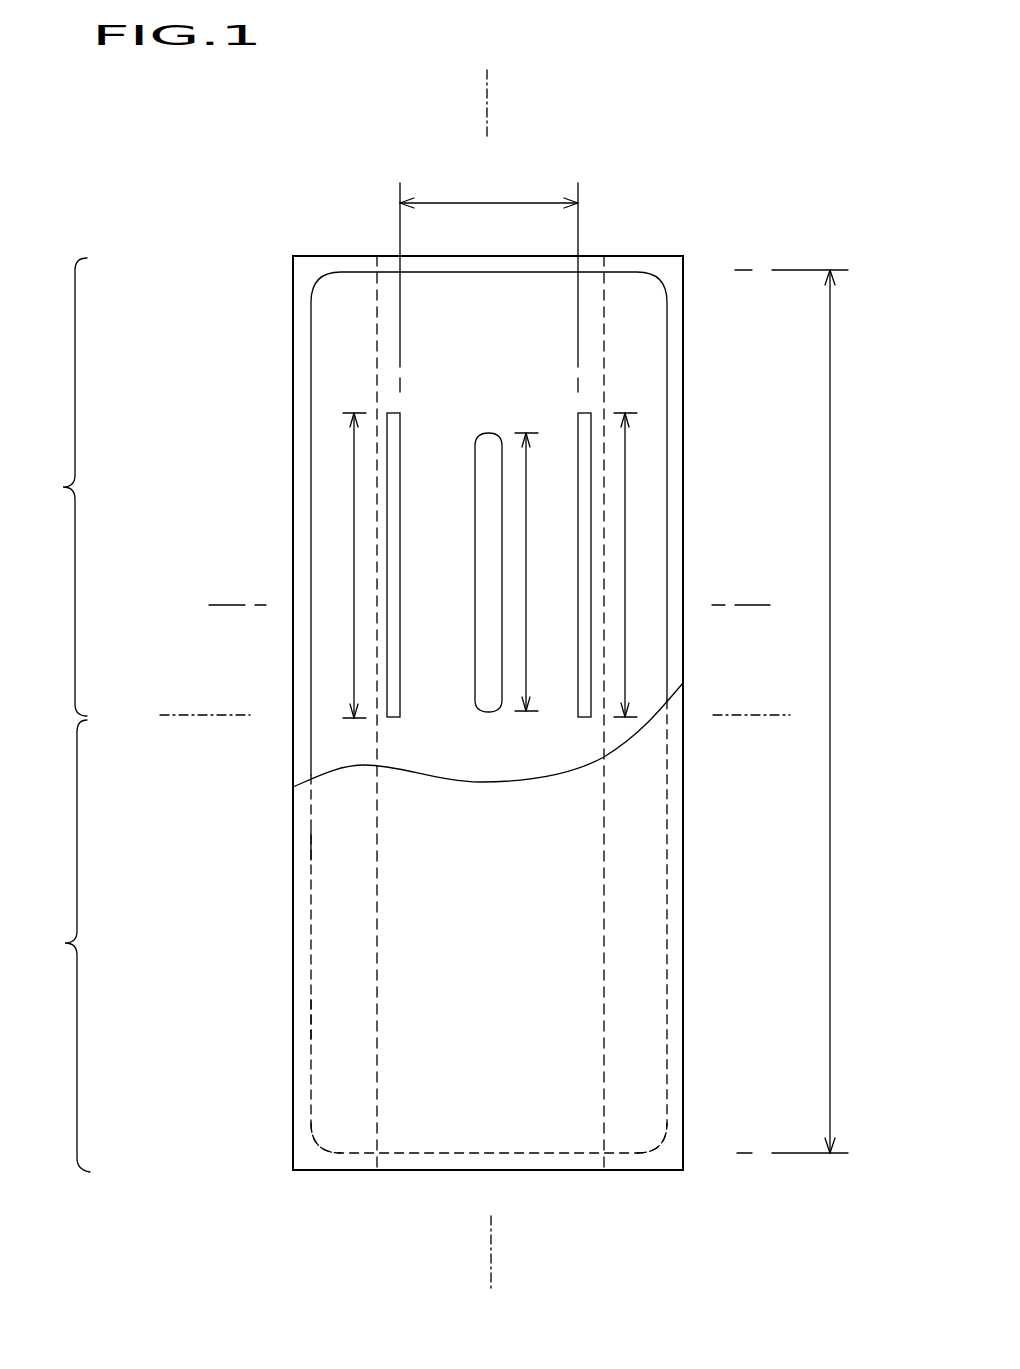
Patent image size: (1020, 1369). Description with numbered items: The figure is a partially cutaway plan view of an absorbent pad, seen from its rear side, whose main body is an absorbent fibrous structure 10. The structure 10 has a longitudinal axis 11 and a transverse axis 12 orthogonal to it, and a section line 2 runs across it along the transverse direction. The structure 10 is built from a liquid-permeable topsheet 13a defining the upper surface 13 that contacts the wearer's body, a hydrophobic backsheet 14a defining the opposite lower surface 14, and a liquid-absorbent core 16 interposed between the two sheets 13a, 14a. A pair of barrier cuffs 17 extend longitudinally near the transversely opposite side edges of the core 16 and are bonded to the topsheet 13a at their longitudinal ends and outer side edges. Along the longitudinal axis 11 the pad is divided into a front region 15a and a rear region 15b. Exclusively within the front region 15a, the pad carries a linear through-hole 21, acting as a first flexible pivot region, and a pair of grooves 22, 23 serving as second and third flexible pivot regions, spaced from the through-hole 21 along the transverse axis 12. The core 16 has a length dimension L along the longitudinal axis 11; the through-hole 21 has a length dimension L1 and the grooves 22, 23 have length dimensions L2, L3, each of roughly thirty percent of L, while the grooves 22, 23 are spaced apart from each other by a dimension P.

The absorbent fibrous structure 10 is at (674, 148).
The longitudinal axis 11 is at (488, 688).
The transverse axis 12 is at (470, 715).
The line 2- 2 is at (491, 605).
The upper surface 13 is at (305, 845).
The liquid-permeable topsheet 13a is at (295, 310).
The lower surface 14 is at (305, 887).
The hydrophobic backsheet 14a is at (305, 1018).
The front region 15a is at (47, 487).
The rear region 15b is at (48, 946).
The liquid-absorbent core 16 is at (330, 362).
The barrier cuffs 17 is at (346, 1163).
The linear through-hole 21 is at (492, 688).
The groove 22 is at (400, 434).
The groove 23 is at (578, 434).
The spacing dimension P is at (496, 203).
The length dimension L is at (832, 650).
The length dimension of linear through-hole L1 is at (527, 600).
The length dimension of groove L2 is at (354, 600).
The length dimension of groove L3 is at (627, 601).